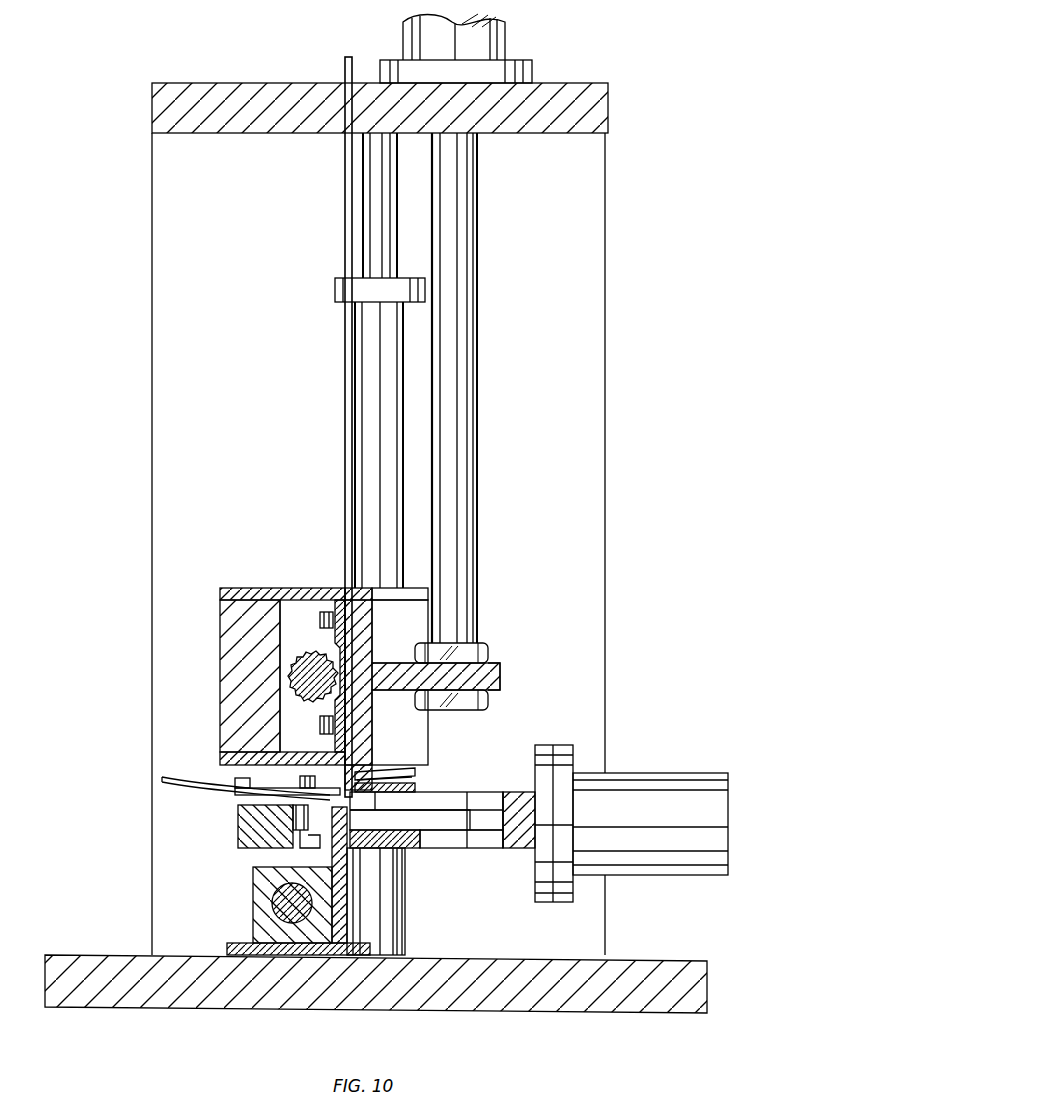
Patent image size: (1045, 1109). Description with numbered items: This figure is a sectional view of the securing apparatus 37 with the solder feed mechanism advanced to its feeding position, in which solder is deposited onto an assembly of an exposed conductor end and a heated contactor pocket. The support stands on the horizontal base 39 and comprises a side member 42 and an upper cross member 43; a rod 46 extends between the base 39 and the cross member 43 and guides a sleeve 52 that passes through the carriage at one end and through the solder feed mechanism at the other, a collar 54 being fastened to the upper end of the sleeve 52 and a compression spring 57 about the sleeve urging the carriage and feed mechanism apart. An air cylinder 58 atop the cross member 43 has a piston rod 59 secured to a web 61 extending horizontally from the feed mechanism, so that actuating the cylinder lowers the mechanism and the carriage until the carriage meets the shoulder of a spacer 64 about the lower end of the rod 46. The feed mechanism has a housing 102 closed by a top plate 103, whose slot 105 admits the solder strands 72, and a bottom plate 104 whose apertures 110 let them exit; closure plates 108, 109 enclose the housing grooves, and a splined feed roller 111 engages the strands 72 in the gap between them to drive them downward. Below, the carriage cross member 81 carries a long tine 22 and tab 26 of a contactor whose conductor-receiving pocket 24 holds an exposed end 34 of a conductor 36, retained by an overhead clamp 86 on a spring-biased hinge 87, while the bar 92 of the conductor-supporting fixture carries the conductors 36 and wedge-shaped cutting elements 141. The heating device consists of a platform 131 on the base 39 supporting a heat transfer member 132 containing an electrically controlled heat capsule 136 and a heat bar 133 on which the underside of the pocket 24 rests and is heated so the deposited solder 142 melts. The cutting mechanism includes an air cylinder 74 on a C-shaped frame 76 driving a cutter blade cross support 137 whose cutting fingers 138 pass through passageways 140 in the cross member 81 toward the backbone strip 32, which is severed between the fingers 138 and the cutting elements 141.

The long tine 22 is at (465, 792).
The conductor-receiving pocket 24 is at (343, 795).
The tab 26 is at (400, 815).
The backbone strip 32 is at (308, 848).
The exposed conductor ends 34 is at (300, 790).
The conductors 36 is at (190, 782).
The securing apparatus 37 is at (668, 118).
The horizontal base 39 is at (92, 958).
The side member 42 is at (152, 160).
The upper cross member 43 is at (570, 88).
The rod 46 is at (370, 190).
The sleeve 52 is at (357, 345).
The collar 54 is at (337, 292).
The compression spring 57 is at (395, 766).
The air cylinder 58 is at (403, 30).
The piston rod 59 is at (462, 215).
The web 61 is at (500, 681).
The spacer 64 is at (395, 940).
The solder strands 72 is at (345, 413).
The air cylinder 74 is at (680, 775).
The C-shaped frame 76 is at (520, 846).
The cross member 81 is at (405, 855).
The overhead clamp 86 is at (425, 792).
The spring-biased hinge 87 is at (415, 784).
The bar 92 is at (240, 835).
The housing 102 is at (226, 641).
The top plate 103 is at (237, 590).
The bottom plate 104 is at (230, 760).
The slot 105 is at (345, 598).
The closure plate 108 is at (337, 605).
The closure plate 109 is at (327, 724).
The apertures 110 is at (400, 727).
The feed roller 111 is at (317, 657).
The platform 131 is at (227, 946).
The heat transfer member 132 is at (259, 905).
The heat bar 133 is at (348, 905).
The heat capsule 136 is at (272, 903).
The cutter blade cross support 137 is at (480, 830).
The cutting fingers 138 is at (455, 835).
The passageways 140 is at (405, 843).
The wedge-shaped cutting elements 141 is at (295, 818).
The deposited solder 142 is at (378, 820).